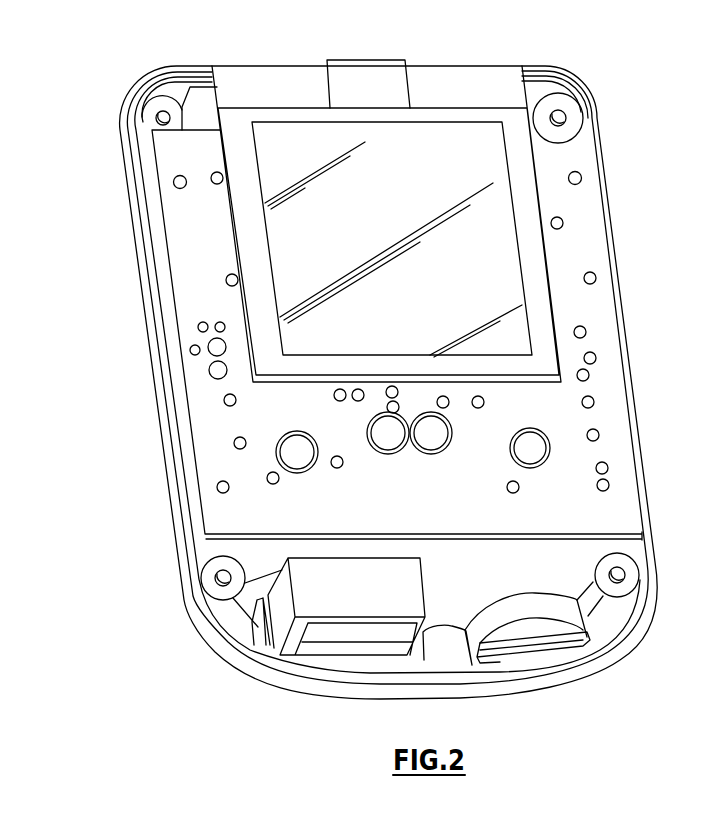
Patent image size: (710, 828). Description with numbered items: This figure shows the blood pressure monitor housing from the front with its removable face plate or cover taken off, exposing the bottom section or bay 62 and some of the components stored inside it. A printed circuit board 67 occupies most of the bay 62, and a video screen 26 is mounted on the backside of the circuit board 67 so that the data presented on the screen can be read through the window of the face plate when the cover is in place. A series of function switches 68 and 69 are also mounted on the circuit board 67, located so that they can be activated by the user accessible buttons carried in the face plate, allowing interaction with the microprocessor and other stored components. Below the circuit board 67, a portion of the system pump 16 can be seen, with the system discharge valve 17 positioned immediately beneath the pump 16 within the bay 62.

The system pump 16 is at (313, 550).
The system discharge valve 17 is at (360, 568).
The video screen 26 is at (423, 137).
The bay 62 is at (172, 553).
The printed circuit board 67 is at (612, 444).
The function switch 68 is at (307, 431).
The function switch 69 is at (400, 455).